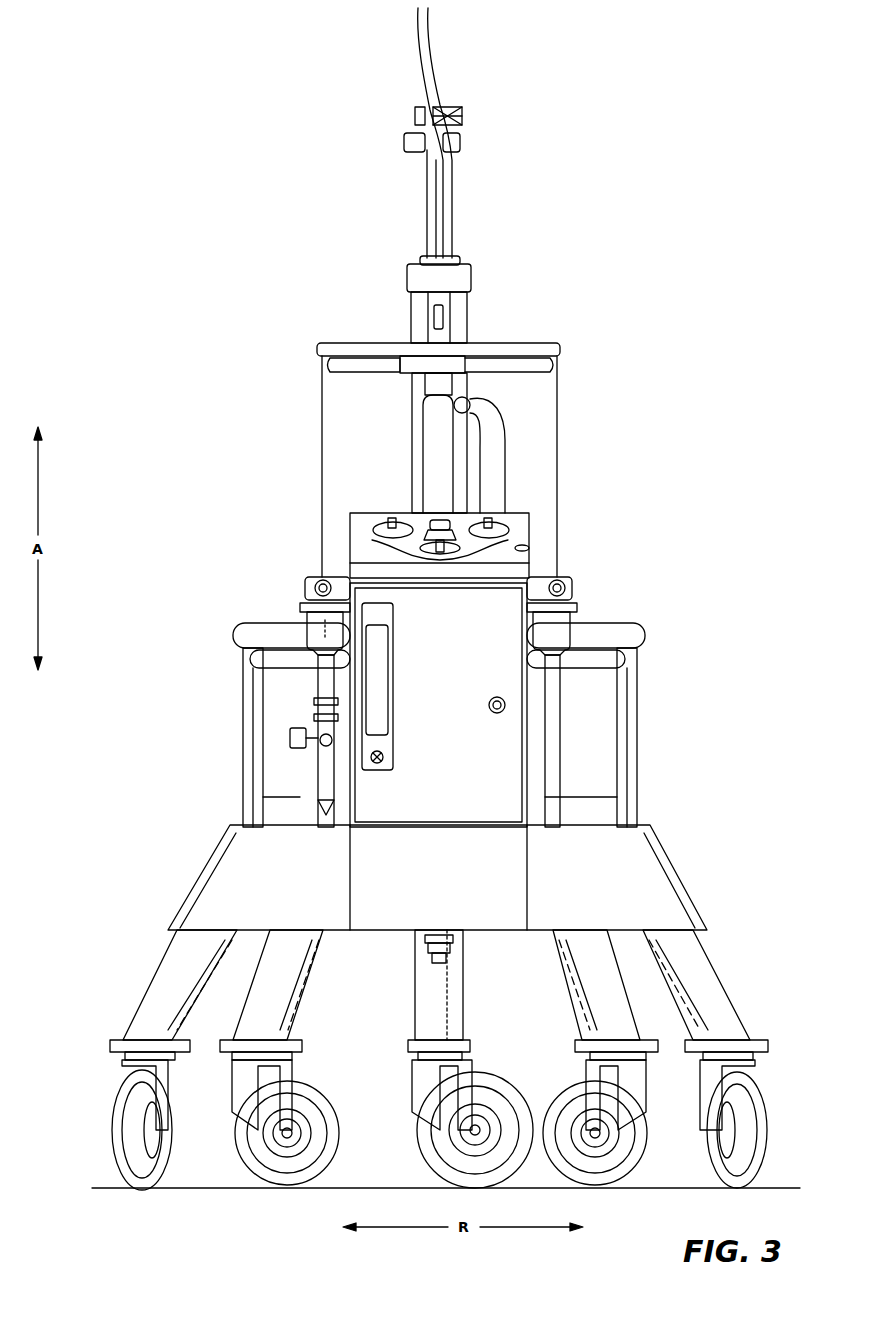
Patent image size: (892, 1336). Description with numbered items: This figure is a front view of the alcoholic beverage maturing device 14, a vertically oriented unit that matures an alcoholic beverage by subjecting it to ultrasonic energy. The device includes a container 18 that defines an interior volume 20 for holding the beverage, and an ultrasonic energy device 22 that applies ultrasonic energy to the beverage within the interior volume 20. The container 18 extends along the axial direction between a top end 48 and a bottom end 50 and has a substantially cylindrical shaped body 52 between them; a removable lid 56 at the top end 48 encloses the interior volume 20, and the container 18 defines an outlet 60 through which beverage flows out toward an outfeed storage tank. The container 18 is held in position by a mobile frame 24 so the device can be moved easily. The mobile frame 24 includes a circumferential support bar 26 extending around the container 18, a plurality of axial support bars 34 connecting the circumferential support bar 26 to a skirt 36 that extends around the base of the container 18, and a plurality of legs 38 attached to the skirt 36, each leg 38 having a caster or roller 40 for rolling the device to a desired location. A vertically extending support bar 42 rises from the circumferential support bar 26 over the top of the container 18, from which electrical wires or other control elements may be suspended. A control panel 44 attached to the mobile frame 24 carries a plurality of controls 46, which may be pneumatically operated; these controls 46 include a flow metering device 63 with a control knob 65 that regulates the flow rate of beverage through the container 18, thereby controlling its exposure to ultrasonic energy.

The alcoholic beverage maturing device 14 is at (193, 215).
The vertically extending support bar 42 is at (447, 172).
The ultrasonic energy device 22 is at (478, 306).
The removable lid 56 is at (352, 342).
The top end 48 is at (285, 355).
The outlet 60 is at (480, 402).
The interior volume 20 is at (530, 462).
The substantially cylindrical shaped body 52 is at (335, 483).
The container 18 is at (320, 538).
The control panel 44 is at (515, 533).
The controls 46 is at (375, 547).
The circumferential support bar 26 is at (628, 630).
The flow metering device 63 is at (410, 700).
The axial support bars 34 is at (625, 730).
The bottom end 50 is at (292, 810).
The control knob 65 is at (385, 757).
The mobile frame 24 is at (722, 803).
The skirt 36 is at (235, 878).
The legs 38 is at (705, 983).
The caster or roller 40 is at (782, 1102).